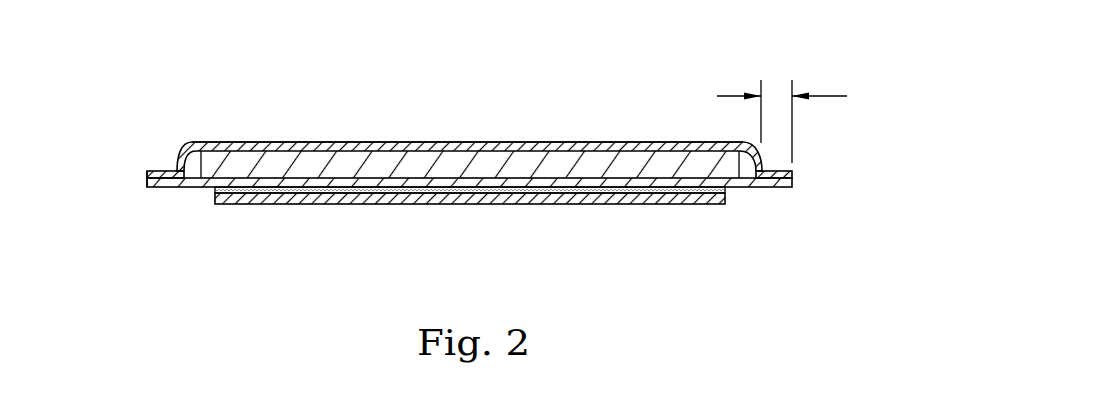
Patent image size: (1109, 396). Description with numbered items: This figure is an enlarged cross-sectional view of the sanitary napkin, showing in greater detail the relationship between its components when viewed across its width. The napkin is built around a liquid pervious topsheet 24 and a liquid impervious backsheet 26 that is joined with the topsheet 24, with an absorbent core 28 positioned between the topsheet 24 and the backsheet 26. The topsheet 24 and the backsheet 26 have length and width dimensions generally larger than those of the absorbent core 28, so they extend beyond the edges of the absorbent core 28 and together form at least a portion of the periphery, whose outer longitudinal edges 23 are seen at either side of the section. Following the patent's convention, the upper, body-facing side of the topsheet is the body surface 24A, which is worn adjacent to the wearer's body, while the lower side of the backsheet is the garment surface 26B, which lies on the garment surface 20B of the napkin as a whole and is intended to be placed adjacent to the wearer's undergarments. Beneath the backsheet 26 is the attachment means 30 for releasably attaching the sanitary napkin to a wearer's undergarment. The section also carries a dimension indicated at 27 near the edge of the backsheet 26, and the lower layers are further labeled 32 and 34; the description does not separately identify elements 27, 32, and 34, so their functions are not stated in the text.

The garment surface 20B is at (193, 187).
The longitudinal edges 23 is at (147, 175).
The liquid pervious topsheet 24 is at (481, 142).
The body surface of topsheet 24A is at (370, 142).
The liquid impervious backsheet 26 is at (752, 187).
The garment surface of backsheet 26B is at (168, 188).
The flange width dimension 27 is at (825, 96).
The absorbent core 28 is at (607, 150).
The attachment means 30 is at (470, 230).
The adhesive layer 32 is at (297, 193).
The backing layer 34 is at (525, 204).